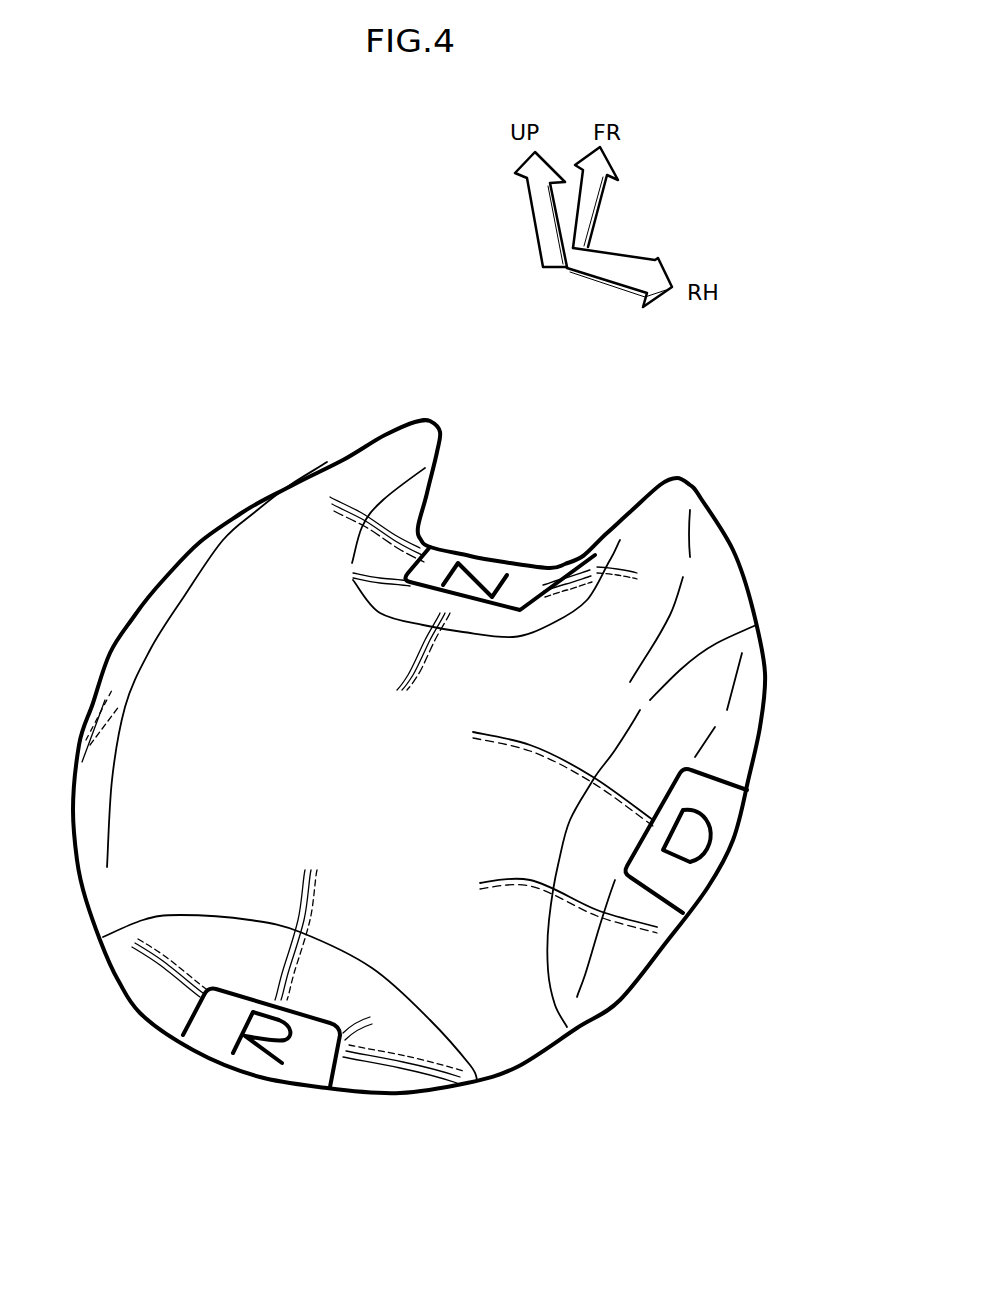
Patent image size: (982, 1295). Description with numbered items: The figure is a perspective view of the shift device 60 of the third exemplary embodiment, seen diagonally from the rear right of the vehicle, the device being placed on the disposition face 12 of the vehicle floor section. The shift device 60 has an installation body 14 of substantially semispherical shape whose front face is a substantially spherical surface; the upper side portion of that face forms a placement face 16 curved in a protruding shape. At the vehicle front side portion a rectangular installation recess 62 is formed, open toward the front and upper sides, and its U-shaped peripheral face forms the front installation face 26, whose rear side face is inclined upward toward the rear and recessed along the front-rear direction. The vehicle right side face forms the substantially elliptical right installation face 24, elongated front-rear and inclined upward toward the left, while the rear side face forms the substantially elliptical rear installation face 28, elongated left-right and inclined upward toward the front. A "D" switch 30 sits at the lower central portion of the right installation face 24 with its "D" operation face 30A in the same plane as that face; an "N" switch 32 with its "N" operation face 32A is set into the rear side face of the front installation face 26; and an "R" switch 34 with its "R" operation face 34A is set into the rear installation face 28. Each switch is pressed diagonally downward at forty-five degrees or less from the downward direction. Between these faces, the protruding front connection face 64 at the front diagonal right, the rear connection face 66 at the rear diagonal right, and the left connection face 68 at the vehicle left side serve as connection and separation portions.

The disposition face 12 is at (143, 497).
The installation body 14 is at (143, 603).
The placement face 16 is at (337, 757).
The right installation face 24 is at (747, 713).
The front installation face 26 is at (407, 528).
The rear installation face 28 is at (157, 1003).
The "D" switch 30 is at (725, 778).
The "D" operation face 30A is at (680, 887).
The "N" switch 32 is at (570, 563).
The "N" operation face 32A is at (440, 560).
The "R" switch 34 is at (337, 1073).
The "R" operation face 34A is at (217, 1037).
The shift device 60 is at (190, 378).
The installation recess 62 is at (423, 472).
The front connection face 64 is at (720, 577).
The rear connection face 66 is at (512, 1033).
The left connection face 68 is at (125, 663).